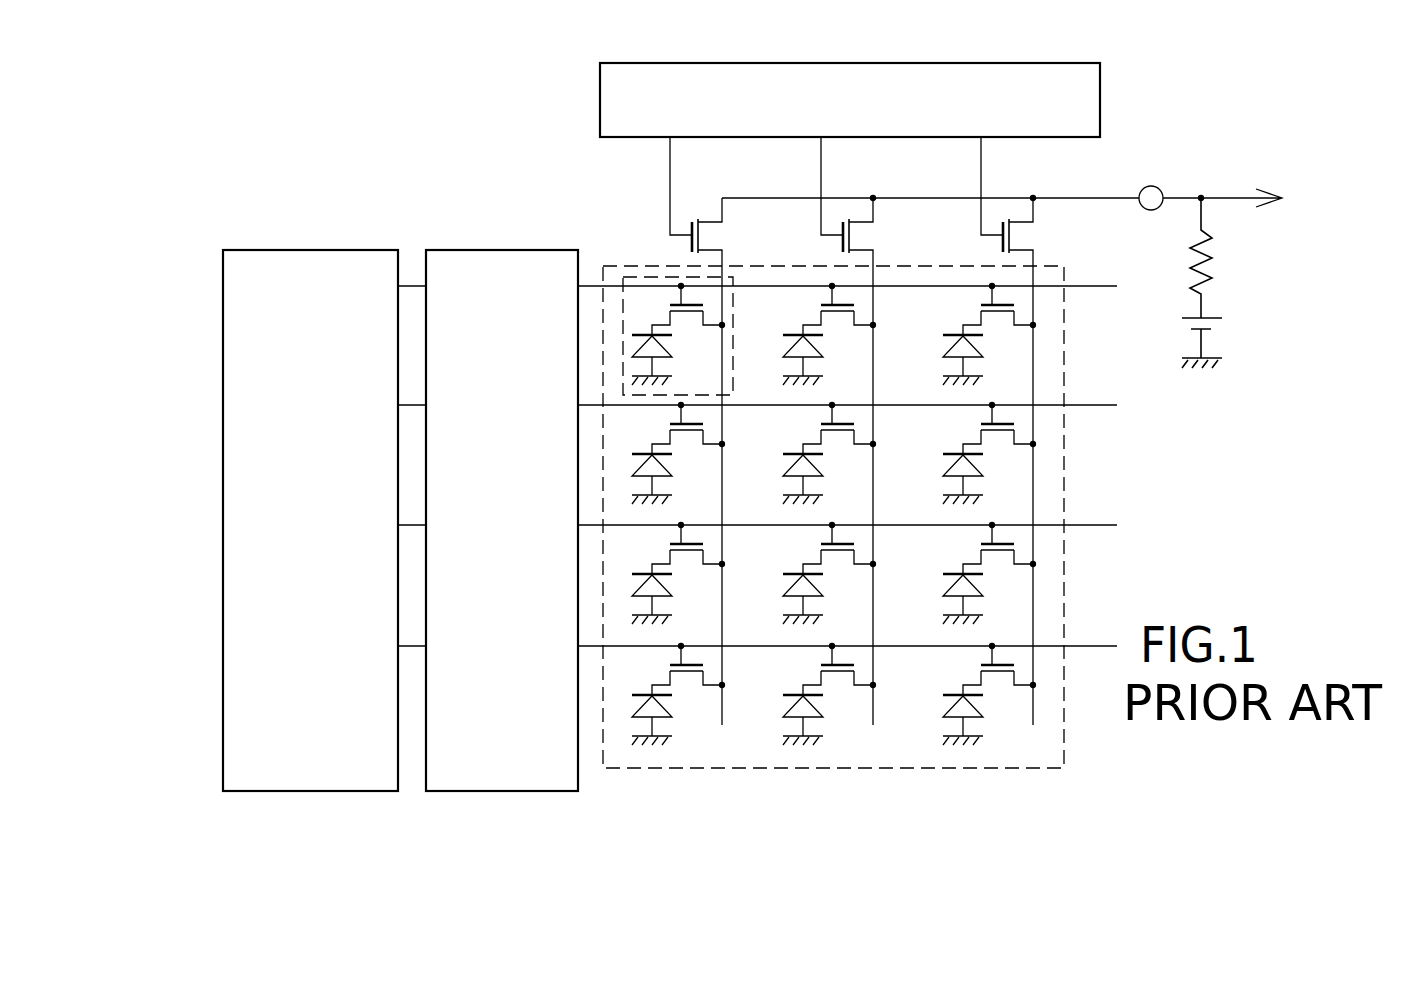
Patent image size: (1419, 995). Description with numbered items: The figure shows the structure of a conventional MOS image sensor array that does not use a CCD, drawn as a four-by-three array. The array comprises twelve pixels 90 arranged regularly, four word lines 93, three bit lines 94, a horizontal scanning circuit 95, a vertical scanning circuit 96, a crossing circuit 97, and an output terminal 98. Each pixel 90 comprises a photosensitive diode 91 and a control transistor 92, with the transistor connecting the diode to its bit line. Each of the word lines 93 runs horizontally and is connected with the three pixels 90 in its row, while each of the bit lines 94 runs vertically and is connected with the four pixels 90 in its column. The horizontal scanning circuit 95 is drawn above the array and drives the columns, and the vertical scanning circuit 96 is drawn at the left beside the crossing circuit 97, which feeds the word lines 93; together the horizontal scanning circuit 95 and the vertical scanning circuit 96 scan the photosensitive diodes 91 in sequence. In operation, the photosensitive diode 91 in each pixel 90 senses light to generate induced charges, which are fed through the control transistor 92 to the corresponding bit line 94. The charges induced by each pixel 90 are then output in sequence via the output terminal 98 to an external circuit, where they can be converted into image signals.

The pixel 90 is at (690, 296).
The photosensitive diode 91 is at (677, 347).
The control transistor 92 is at (695, 330).
The word line 93 is at (755, 285).
The bit line 94 is at (725, 480).
The horizontal scanning circuit 95 is at (976, 76).
The vertical scanning circuit 96 is at (224, 766).
The crossing circuit 97 is at (570, 770).
The output terminal 98 is at (1243, 192).